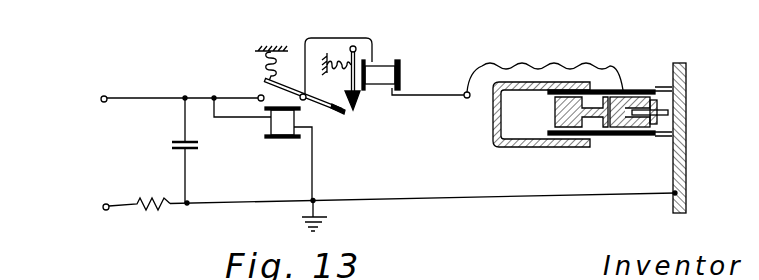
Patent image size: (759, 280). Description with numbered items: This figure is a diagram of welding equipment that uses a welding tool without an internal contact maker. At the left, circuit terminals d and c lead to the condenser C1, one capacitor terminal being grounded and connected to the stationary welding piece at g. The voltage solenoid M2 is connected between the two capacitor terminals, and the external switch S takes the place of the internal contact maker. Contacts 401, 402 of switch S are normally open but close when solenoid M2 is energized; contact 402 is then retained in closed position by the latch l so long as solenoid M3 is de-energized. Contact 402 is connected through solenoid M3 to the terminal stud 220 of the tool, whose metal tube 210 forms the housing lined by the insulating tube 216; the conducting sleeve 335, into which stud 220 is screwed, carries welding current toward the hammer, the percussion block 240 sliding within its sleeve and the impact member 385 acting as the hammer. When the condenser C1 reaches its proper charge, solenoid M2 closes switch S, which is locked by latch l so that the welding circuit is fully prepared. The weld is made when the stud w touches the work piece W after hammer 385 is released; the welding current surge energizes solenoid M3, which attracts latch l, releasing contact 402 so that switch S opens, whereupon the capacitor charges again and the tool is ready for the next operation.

The input terminal d is at (101, 89).
The input terminal c is at (92, 250).
The condenser C1 is at (170, 150).
The contact 401 is at (258, 95).
The contact 402 is at (263, 82).
The voltage solenoid M2 is at (265, 133).
The solenoid M3 is at (382, 72).
The latch l is at (360, 102).
The external switch S is at (340, 112).
The ground connection g is at (385, 199).
The metal tube 210 is at (518, 148).
The terminal stud 220 is at (585, 85).
The impact member 385 is at (590, 113).
The percussion block 240 is at (622, 135).
The conducting sleeve 335 is at (660, 137).
The insulating tube 216 is at (518, 245).
The stud w is at (668, 88).
The work piece W is at (687, 108).